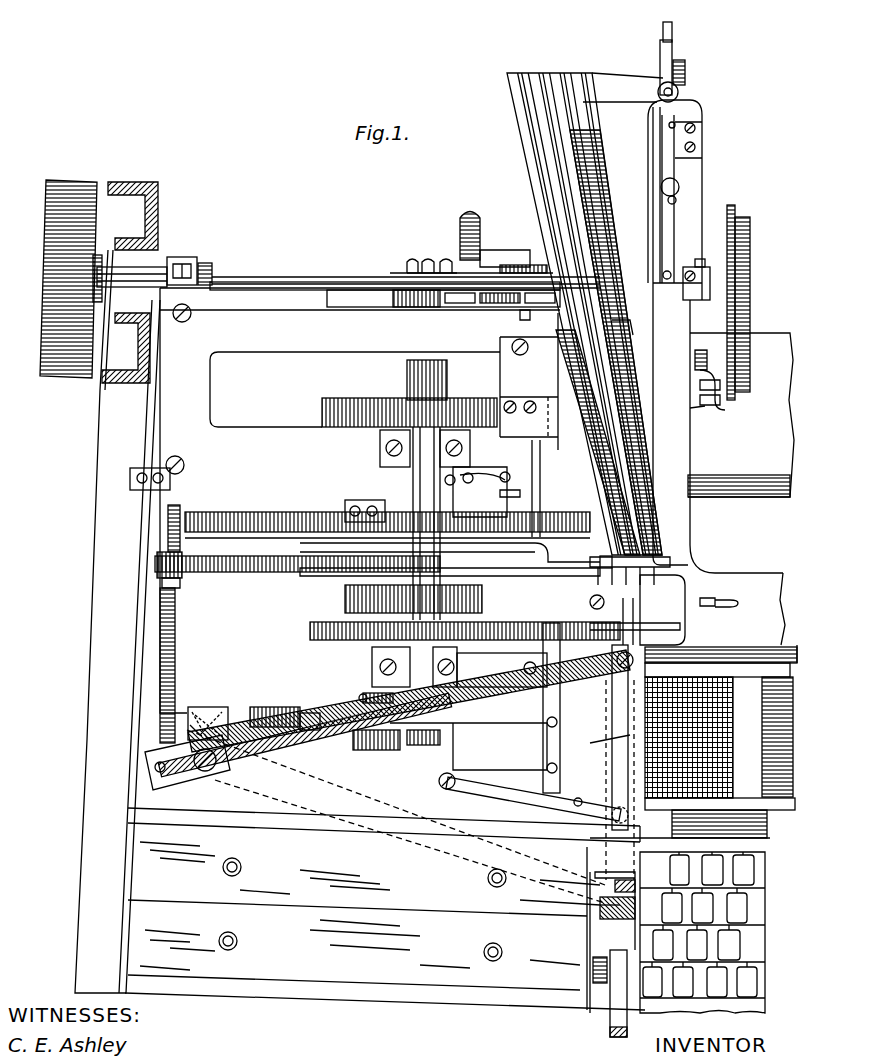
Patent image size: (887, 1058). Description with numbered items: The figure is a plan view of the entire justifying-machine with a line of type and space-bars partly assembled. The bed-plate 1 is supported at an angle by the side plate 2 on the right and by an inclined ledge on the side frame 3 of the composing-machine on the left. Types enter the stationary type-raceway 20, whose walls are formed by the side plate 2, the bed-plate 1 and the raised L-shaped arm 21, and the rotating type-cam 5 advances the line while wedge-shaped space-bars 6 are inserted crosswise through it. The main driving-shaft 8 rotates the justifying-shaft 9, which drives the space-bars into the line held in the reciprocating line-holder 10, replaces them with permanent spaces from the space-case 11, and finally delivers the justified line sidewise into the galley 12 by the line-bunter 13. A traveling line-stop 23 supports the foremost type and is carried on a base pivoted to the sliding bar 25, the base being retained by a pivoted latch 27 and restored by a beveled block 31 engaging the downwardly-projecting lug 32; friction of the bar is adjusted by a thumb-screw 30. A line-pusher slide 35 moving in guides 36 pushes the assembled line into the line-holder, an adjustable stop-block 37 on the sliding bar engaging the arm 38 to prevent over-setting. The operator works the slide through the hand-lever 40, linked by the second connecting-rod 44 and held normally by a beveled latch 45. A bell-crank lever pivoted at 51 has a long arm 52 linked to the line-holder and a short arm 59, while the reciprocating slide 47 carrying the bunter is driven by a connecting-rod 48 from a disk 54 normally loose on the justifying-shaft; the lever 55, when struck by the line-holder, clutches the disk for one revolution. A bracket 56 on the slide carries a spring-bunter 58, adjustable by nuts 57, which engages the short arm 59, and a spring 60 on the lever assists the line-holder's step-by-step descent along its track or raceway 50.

The bed-plate 1 is at (380, 500).
The side plate 2 is at (690, 214).
The side frame 3 is at (105, 545).
The rotating type-cam 5 is at (691, 283).
The wedge-shaped space-bars 6 is at (622, 334).
The main driving-shaft 8 is at (272, 278).
The justifying-shaft 9 is at (425, 392).
The reciprocating line-holder 10 is at (645, 449).
The space-case 11 is at (642, 497).
The galley 12 is at (800, 650).
The line-bunter 13 is at (560, 714).
The type-raceway 20 is at (655, 333).
The L-shaped arm 21 is at (565, 432).
The traveling line-stop 23 is at (690, 405).
The sliding bar 25 is at (686, 73).
The pivoted latch 27 is at (698, 413).
The thumb-screw 30 is at (683, 181).
The beveled block 31 is at (720, 396).
The downwardly-projecting lug 32 is at (690, 401).
The line-pusher slide 35 is at (663, 57).
The guides 36 is at (673, 26).
The adjustable stop-block 37 is at (640, 100).
The arm 38 is at (655, 149).
The hand-lever 40 is at (600, 1018).
The second connecting-rod 44 is at (655, 178).
The beveled latch 45 is at (600, 918).
The reciprocating slide 47 is at (505, 752).
The connecting-rod 48 is at (378, 752).
The track or raceway 50 is at (620, 748).
The pivot 51 is at (192, 786).
The long arm of bell-crank lever 52 is at (496, 690).
The disk 54 is at (420, 752).
The lever 55 is at (497, 795).
The bracket 56 is at (272, 707).
The nuts 57 is at (318, 714).
The spring-bunter 58 is at (233, 707).
The short arm of bell-crank lever 59 is at (214, 712).
The spring 60 is at (178, 615).